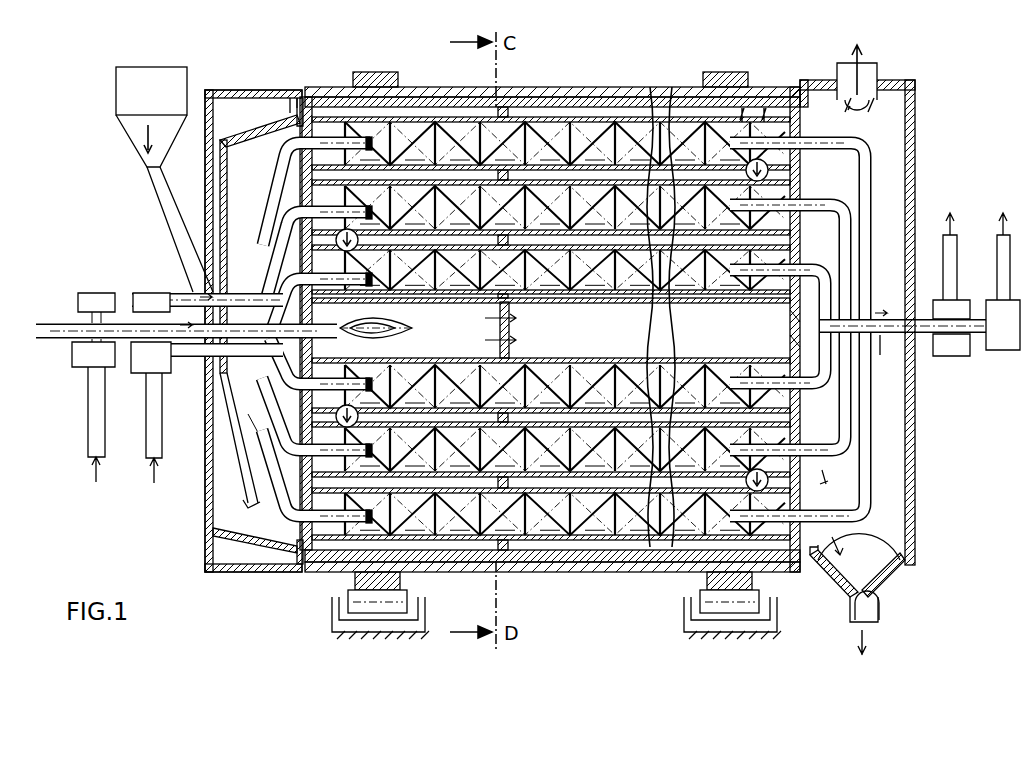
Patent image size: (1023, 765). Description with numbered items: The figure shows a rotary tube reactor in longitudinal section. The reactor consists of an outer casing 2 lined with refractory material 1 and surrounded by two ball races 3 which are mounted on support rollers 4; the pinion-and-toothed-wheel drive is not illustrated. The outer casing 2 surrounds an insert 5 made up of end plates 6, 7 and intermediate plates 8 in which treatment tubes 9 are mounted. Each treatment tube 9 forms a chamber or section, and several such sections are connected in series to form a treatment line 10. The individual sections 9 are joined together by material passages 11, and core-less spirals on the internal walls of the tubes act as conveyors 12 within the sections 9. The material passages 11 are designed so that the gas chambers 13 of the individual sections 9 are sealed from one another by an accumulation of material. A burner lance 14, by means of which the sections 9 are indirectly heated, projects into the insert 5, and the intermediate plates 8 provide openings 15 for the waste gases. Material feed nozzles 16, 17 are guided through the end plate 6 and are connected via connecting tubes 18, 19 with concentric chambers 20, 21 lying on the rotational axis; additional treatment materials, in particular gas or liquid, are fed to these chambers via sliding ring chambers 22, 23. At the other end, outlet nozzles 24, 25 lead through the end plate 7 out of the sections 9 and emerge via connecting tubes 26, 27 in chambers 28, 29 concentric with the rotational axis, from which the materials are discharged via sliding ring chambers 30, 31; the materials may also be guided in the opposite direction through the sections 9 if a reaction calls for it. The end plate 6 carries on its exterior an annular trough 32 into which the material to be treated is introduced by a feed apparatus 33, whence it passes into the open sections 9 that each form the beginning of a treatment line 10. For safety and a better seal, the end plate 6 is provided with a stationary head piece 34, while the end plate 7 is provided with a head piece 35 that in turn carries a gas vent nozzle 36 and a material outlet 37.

The refractory material 1 is at (580, 92).
The outer casing 2 is at (605, 90).
The ball races 3 is at (368, 73).
The support rollers 4 is at (400, 595).
The insert 5 is at (665, 105).
The end plate 6 is at (305, 95).
The end plate 7 is at (795, 92).
The intermediate plates 8 is at (505, 110).
The treatment tubes 9 is at (458, 262).
The treatment line 10 is at (546, 175).
The material passages 11 is at (356, 246).
The conveyors 12 is at (520, 540).
The gas chambers 13 is at (580, 514).
The burner lance 14 is at (49, 322).
The openings 15 is at (520, 330).
The material feed nozzle 16 is at (325, 160).
The material feed nozzle 17 is at (395, 316).
The connecting tube 18 is at (262, 240).
The connecting tube 19 is at (270, 280).
The concentric chamber 20 is at (128, 293).
The concentric chamber 21 is at (182, 345).
The sliding ring chamber 22 is at (82, 372).
The sliding ring chamber 23 is at (146, 376).
The outlet nozzle 24 is at (760, 138).
The outlet nozzle 25 is at (795, 235).
The connecting tube 26 is at (866, 164).
The connecting tube 27 is at (830, 232).
The chamber 28 is at (889, 340).
The chamber 29 is at (896, 320).
The sliding ring chamber 30 is at (955, 358).
The sliding ring chamber 31 is at (1007, 352).
The annular trough 32 is at (226, 530).
The feed apparatus 33 is at (122, 92).
The stationary head piece 34 is at (213, 566).
The head piece 35 is at (915, 515).
The gas vent nozzle 36 is at (840, 70).
The material outlet 37 is at (872, 605).